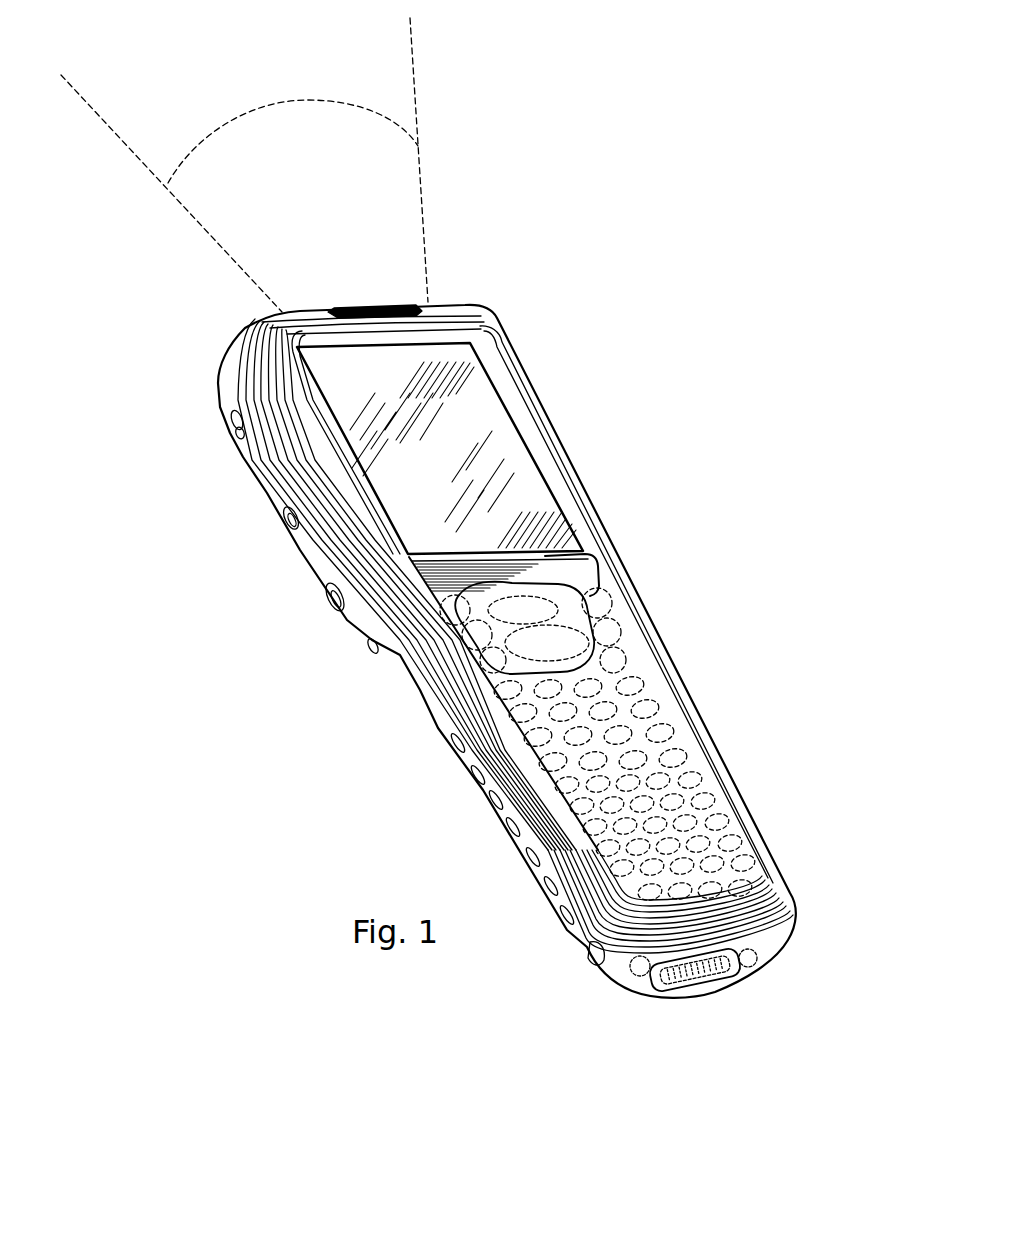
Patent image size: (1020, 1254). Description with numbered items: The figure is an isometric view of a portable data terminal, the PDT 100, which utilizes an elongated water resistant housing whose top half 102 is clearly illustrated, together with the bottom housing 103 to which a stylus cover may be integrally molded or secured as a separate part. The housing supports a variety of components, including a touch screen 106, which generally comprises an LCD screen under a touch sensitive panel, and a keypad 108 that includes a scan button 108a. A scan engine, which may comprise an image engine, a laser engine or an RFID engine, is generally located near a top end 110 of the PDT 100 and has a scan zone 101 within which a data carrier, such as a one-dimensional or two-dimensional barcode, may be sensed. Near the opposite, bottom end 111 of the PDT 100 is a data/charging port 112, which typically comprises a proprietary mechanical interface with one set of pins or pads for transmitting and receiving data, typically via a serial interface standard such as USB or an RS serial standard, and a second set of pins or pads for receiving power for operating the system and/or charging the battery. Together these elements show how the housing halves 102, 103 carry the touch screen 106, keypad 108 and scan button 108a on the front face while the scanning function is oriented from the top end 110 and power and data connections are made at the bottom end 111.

The PDT 100 is at (516, 233).
The scan zone 101 is at (307, 167).
The top half of the housing 102 is at (506, 350).
The bottom housing 103 is at (249, 464).
The touch screen 106 is at (443, 437).
The keypad 108 is at (682, 757).
The scan button 108a is at (572, 652).
The top end 110 is at (232, 319).
The bottom end 111 is at (631, 992).
The data/charging port 112 is at (738, 976).